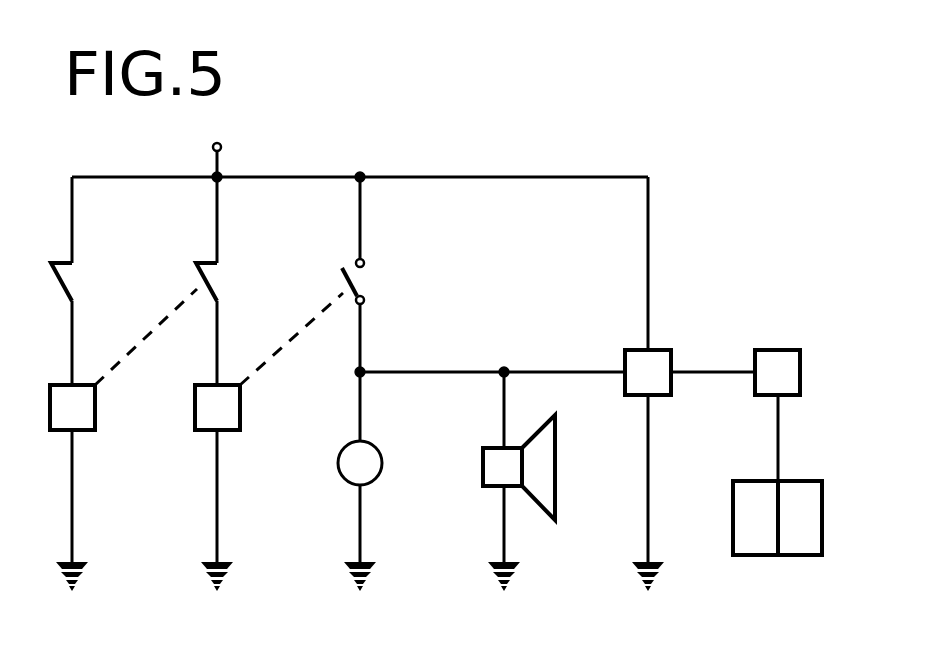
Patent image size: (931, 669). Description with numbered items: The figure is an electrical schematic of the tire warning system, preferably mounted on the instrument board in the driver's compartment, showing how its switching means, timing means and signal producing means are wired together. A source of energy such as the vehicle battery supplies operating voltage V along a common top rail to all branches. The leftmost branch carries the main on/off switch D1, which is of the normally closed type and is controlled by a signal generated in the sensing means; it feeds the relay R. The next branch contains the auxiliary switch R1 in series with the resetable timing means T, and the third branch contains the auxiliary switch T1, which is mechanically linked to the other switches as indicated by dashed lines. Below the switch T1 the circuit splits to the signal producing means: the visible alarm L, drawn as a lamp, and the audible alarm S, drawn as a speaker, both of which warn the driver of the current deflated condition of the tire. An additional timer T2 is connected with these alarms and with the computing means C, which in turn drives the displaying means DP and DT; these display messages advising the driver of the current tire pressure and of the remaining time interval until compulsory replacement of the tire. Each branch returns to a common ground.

The operating voltage V is at (237, 153).
The main on/off switch D1 is at (78, 282).
The auxiliary switch R1 is at (223, 282).
The auxiliary switch T1 is at (368, 281).
The relay R is at (72, 407).
The resetable timing means T is at (217, 407).
The visible alarm L is at (348, 463).
The audible alarm S is at (507, 467).
The additional timer T2 is at (648, 372).
The computing means C is at (777, 372).
The displaying means DP is at (777, 518).
The displaying means DT is at (800, 518).